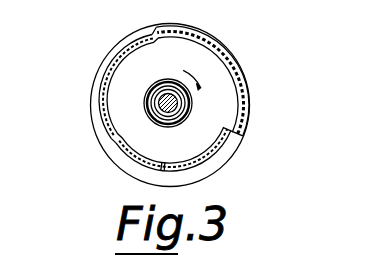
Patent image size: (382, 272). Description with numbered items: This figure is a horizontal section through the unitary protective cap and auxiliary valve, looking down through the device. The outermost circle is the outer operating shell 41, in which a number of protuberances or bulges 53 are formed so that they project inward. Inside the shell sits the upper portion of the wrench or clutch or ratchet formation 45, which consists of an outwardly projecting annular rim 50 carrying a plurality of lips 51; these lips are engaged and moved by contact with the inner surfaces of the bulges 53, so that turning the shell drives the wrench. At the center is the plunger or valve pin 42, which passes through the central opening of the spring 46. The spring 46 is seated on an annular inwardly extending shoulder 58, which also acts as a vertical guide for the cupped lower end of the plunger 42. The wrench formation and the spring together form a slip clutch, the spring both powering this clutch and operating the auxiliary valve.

The outer operating shell 41 is at (199, 42).
The plunger or valve pin 42 is at (159, 102).
The wrench or clutch or ratchet formation 45 is at (179, 73).
The spring 46 is at (151, 110).
The annular rim 50 is at (132, 76).
The lips 51 is at (232, 107).
The protuberances or bulges 53 is at (153, 31).
The annular inwardly extending shoulder 58 is at (177, 116).